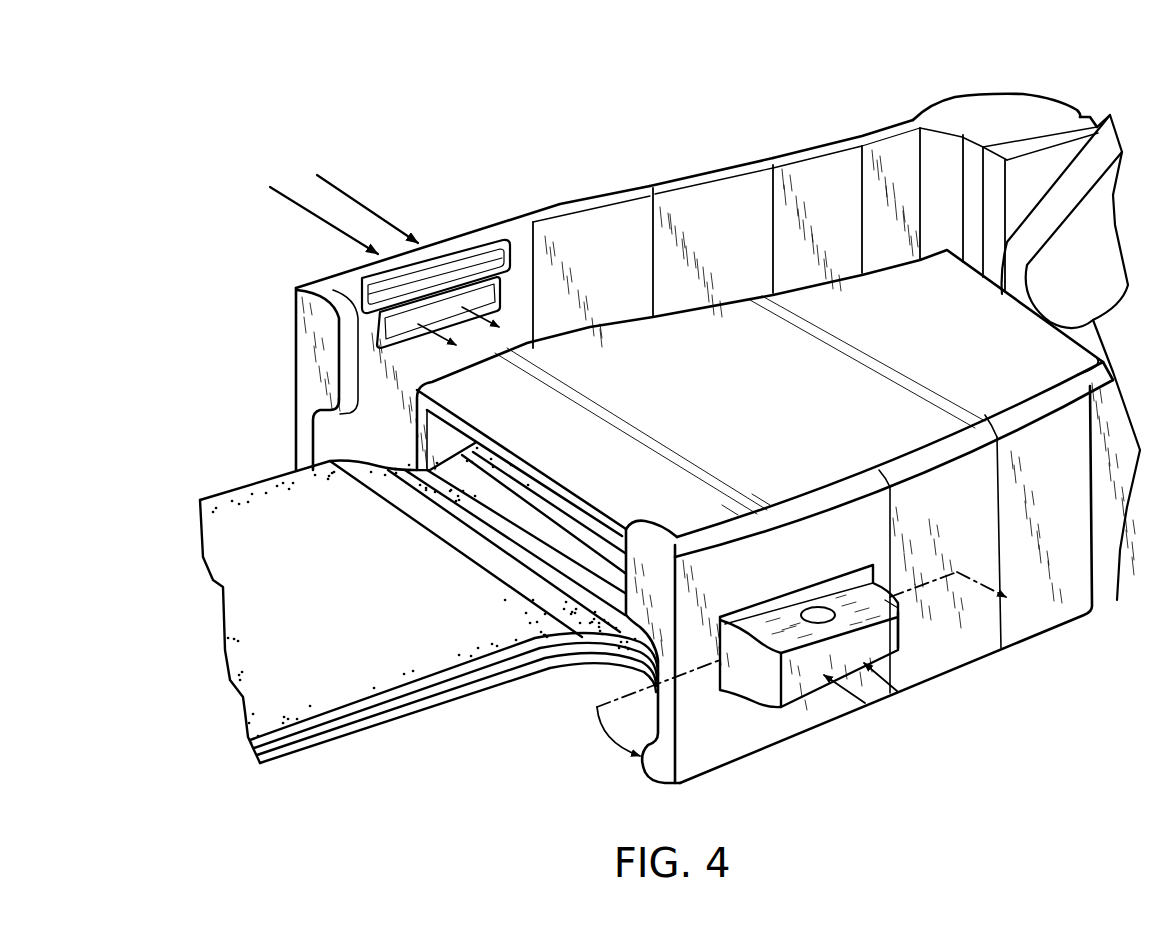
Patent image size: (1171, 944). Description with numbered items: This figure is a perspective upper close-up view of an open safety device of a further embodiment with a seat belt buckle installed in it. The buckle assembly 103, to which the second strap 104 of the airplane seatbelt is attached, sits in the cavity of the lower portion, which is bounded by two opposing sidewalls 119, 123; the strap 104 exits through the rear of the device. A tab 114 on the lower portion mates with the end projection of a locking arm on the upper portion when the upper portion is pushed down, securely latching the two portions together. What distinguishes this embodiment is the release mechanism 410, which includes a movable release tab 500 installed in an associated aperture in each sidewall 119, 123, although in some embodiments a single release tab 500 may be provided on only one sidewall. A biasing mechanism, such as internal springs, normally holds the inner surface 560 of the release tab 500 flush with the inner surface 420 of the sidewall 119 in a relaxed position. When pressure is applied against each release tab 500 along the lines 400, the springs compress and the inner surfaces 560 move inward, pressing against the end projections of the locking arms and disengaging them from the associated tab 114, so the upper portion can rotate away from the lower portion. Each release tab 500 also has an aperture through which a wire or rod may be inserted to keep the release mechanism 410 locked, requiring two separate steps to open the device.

The buckle assembly 103 is at (604, 337).
The second strap 104 is at (333, 683).
The tab 114 is at (435, 268).
The sidewall 119 is at (1030, 620).
The sidewall 123 is at (658, 184).
The lines 400 is at (337, 192).
The release mechanism 410 is at (763, 707).
The inner surface of sidewall 420 is at (800, 203).
The movable release tab 500 is at (900, 663).
The inner surface of release tab 560 is at (480, 290).